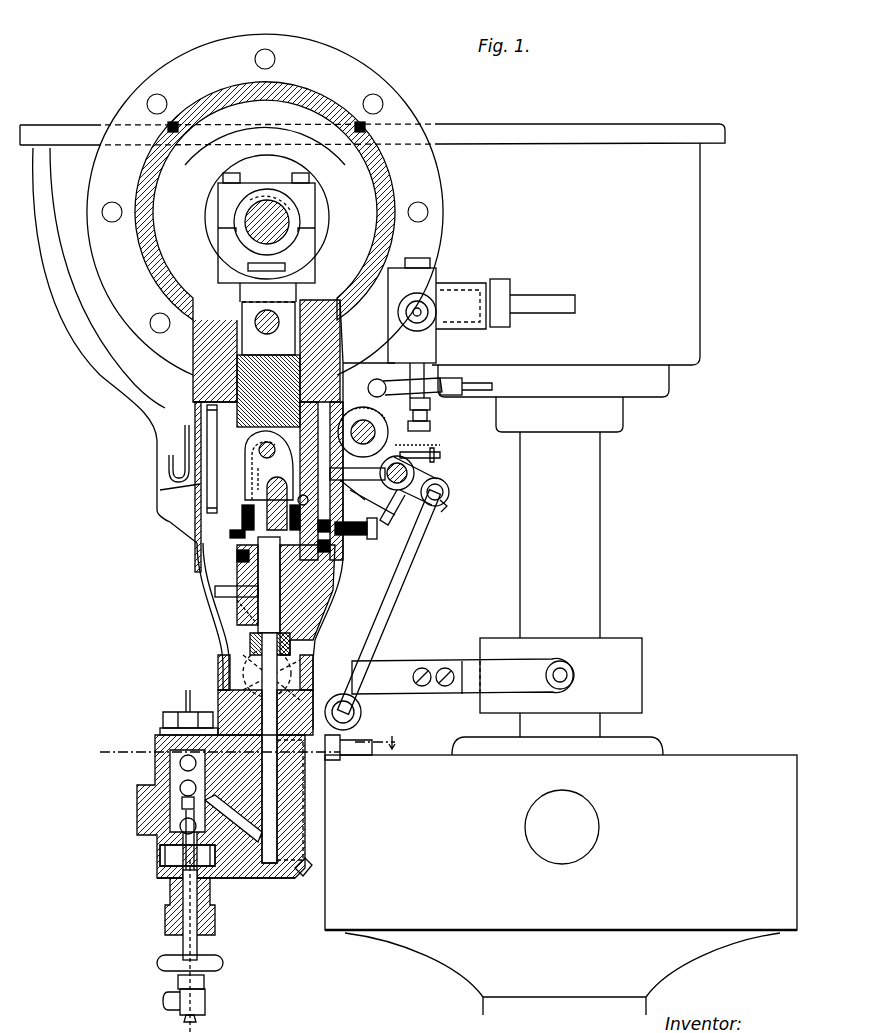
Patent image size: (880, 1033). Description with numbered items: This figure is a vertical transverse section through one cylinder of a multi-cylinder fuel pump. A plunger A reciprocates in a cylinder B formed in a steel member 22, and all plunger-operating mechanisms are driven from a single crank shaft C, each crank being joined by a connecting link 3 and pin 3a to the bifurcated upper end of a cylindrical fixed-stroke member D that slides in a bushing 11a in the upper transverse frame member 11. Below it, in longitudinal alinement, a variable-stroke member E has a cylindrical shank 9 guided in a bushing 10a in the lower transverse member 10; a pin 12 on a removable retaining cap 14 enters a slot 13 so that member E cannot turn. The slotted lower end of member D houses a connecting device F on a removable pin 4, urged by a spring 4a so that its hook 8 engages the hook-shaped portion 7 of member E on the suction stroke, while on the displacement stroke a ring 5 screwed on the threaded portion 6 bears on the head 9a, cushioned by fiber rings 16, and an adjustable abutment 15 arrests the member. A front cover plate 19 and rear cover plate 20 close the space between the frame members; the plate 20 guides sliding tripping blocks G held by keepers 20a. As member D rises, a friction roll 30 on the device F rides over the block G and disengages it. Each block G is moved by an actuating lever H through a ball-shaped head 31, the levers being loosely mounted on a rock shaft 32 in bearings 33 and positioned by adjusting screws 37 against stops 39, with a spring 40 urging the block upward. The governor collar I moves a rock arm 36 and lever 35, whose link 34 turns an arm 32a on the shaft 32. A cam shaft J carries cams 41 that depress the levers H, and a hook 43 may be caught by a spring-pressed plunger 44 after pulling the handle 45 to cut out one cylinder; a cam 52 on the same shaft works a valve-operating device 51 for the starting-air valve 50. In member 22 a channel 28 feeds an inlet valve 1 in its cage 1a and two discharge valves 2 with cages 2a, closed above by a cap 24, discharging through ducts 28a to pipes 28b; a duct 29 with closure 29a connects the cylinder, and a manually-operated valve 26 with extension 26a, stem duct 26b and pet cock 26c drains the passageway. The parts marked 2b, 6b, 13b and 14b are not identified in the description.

The inlet valve 1 is at (186, 838).
The cage 1a is at (175, 853).
The discharge valves 2 is at (180, 765).
The cages 2a is at (178, 790).
The ball valve seat 2b is at (180, 806).
The connecting link 3 is at (266, 237).
The pin 3a is at (262, 330).
The removable pin 4 is at (262, 452).
The spring 4a is at (207, 430).
The ring 5 is at (268, 512).
The screw-threaded portion 6 is at (270, 488).
The stop 6b is at (440, 447).
The hook-shaped portion 7 is at (262, 480).
The hook 8 is at (270, 510).
The cylindrical shank 9 is at (280, 644).
The head 9a is at (237, 532).
The transverse member 10 is at (318, 625).
The bushing 10a is at (228, 655).
The transverse member 11 is at (338, 342).
The bushing 11a is at (237, 392).
The pin 12 is at (228, 591).
The slot 13 is at (225, 632).
The passage direction 13b is at (191, 706).
The retaining member 14 is at (240, 605).
The center line of passage 14b is at (254, 746).
The adjustable abutment 15 is at (237, 567).
The rings 16 is at (240, 555).
The cover plate 19 is at (190, 470).
The cover plate 20 is at (335, 612).
The keepers 20a is at (296, 437).
The steel member 22 is at (260, 880).
The removable cap 24 is at (182, 712).
The manually-operated valve 26 is at (200, 940).
The extension 26a is at (176, 827).
The duct 26b is at (180, 949).
The pet cock 26c is at (180, 1000).
The channel 28 is at (175, 870).
The discharge ducts 28a is at (170, 733).
The discharge pipes 28b is at (358, 758).
The duct 29 is at (233, 836).
The removable closure 29a is at (300, 870).
The friction roll 30 is at (315, 529).
The ball-shaped head 31 is at (357, 473).
The rock shaft 32 is at (414, 472).
The arm 32a is at (444, 504).
The bearings 33 is at (449, 492).
The link 34 is at (405, 572).
The lever 35 is at (348, 694).
The rock arm 36 is at (430, 668).
The adjusting screws 37 is at (441, 455).
The stop 39 is at (420, 428).
The spring 40 is at (365, 407).
The cams 41 is at (405, 381).
The hook 43 is at (323, 550).
The spring-pressed plunger 44 is at (368, 540).
The handle 45 is at (420, 522).
The valve 50 is at (432, 300).
The valve-operating device 51 is at (481, 387).
The cam 52 is at (430, 408).
The plunger A is at (270, 818).
The cylinder B is at (305, 846).
The crank shaft C is at (245, 218).
The fixed-stroke member D is at (237, 407).
The variable-stroke member E is at (280, 600).
The connecting device F is at (160, 490).
The tripping block G is at (355, 491).
The actuating lever H is at (372, 507).
The governor collar I is at (642, 676).
The cam shaft J is at (451, 387).